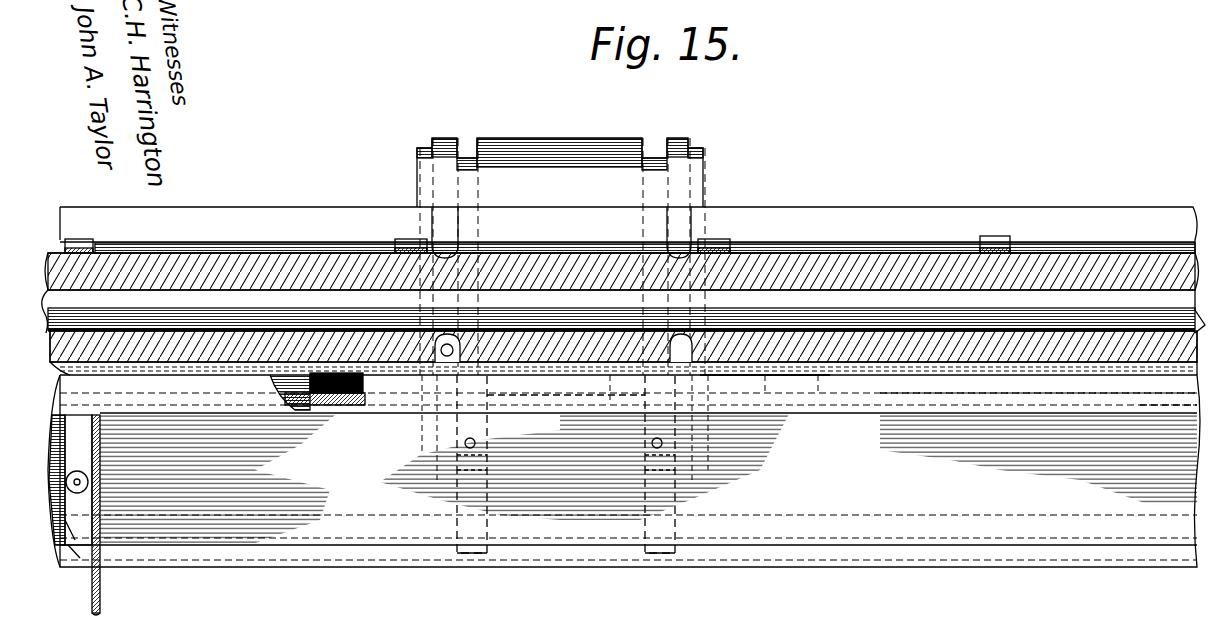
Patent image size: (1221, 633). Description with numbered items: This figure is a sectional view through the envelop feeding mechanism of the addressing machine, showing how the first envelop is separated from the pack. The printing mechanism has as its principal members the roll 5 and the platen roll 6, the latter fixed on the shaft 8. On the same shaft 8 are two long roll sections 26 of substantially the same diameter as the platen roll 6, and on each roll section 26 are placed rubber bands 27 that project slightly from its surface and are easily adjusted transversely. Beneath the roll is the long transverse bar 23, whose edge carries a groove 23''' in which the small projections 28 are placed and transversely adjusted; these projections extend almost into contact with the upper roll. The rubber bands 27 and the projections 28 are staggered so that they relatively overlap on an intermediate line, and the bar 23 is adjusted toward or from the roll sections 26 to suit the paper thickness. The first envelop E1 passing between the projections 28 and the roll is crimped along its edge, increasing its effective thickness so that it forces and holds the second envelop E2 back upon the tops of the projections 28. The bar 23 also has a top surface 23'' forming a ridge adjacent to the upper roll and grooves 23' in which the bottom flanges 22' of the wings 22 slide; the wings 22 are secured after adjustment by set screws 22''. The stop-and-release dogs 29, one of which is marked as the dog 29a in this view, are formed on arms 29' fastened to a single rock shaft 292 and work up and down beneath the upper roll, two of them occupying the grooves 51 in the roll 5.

The roll 5 is at (562, 148).
The grooves 51 is at (650, 190).
The platen roll 6 is at (532, 262).
The shaft 8 is at (782, 297).
The first envelop E1 is at (1078, 222).
The second envelop E2 is at (819, 374).
The roll sections 26 is at (221, 249).
The rubber bands 27 is at (84, 243).
The projections 28 is at (350, 384).
The stop-and-release dogs 29 is at (563, 324).
The rods 29a is at (688, 312).
The arms 29' is at (566, 453).
The rock shaft 292 is at (541, 540).
The transverse bar 23 is at (624, 489).
The grooves 23' is at (1038, 504).
The top surface 23'' is at (1038, 424).
The groove 23''' is at (348, 421).
The wings 22 is at (116, 515).
The bottom flanges 22' is at (61, 509).
The set screws 22'' is at (112, 480).